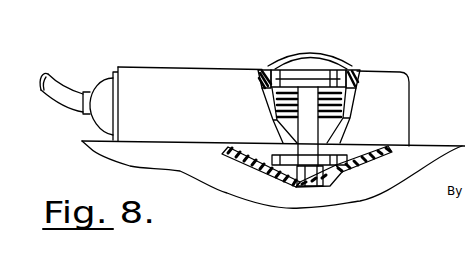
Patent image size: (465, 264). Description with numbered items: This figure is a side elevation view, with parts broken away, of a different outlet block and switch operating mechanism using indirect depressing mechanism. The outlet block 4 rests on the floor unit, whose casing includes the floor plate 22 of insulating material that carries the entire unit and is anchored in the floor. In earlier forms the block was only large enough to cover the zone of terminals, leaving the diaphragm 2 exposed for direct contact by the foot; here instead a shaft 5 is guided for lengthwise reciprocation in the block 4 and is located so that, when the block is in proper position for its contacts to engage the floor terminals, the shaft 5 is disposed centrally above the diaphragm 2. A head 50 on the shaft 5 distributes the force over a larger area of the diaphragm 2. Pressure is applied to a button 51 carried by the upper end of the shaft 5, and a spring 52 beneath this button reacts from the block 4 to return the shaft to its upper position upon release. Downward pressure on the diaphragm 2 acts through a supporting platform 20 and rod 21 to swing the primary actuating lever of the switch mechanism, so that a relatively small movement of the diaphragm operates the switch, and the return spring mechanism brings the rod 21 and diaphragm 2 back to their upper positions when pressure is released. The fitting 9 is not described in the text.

The diaphragm 2 is at (390, 158).
The outlet block 4 is at (172, 77).
The shaft 5 is at (320, 133).
The conduit fitting 9 is at (107, 90).
The supporting platform 20 is at (302, 170).
The rod 21 is at (315, 168).
The floor plate 22 is at (237, 150).
The head 50 is at (283, 137).
The button 51 is at (310, 62).
The spring 52 is at (357, 80).